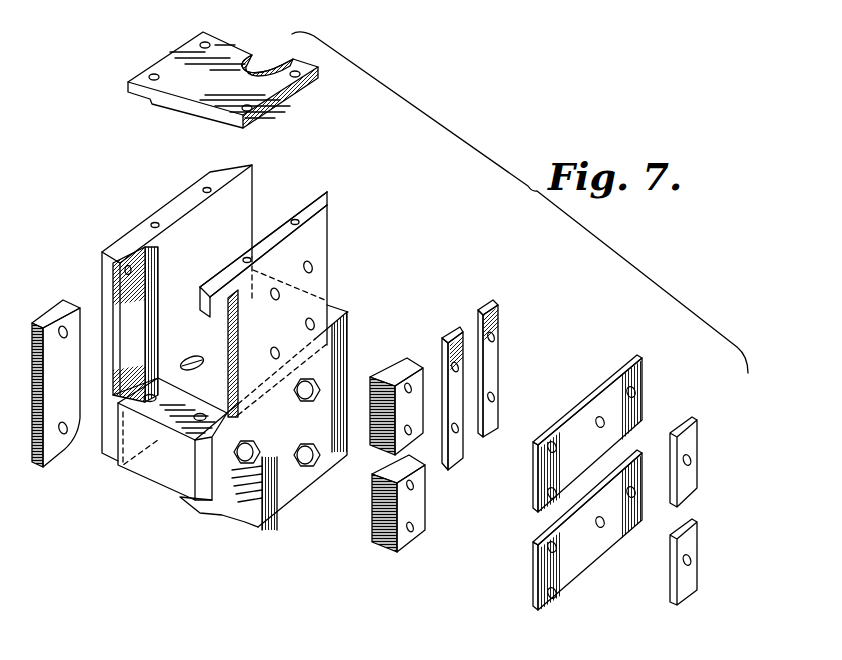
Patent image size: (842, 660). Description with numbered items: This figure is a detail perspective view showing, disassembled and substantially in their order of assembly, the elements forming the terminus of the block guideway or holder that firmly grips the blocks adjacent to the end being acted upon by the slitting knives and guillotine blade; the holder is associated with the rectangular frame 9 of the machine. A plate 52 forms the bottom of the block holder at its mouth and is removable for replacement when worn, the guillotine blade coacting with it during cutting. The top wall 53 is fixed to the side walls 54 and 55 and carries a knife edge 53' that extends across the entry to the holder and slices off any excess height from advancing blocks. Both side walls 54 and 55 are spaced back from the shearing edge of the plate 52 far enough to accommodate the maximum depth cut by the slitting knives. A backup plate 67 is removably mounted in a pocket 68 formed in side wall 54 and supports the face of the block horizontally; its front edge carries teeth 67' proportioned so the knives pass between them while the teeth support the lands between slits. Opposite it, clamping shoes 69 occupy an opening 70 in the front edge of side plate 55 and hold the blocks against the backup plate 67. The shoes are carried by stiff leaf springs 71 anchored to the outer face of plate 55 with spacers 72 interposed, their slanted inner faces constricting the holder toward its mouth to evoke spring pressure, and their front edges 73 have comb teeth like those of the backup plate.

The rectangular frame 9 is at (245, 517).
The plate 52 is at (178, 437).
The top wall 53 is at (223, 79).
The knife edge 53' is at (274, 41).
The side wall 54 is at (188, 200).
The side wall 55 is at (312, 210).
The backup plate 67 is at (51, 373).
The teeth 67' is at (46, 415).
The pocket 68 is at (120, 293).
The clamping shoes 69 is at (400, 375).
The opening 70 is at (210, 316).
The leaf springs 71 is at (588, 397).
The spacers 72 is at (450, 327).
The front edges 73 is at (372, 432).